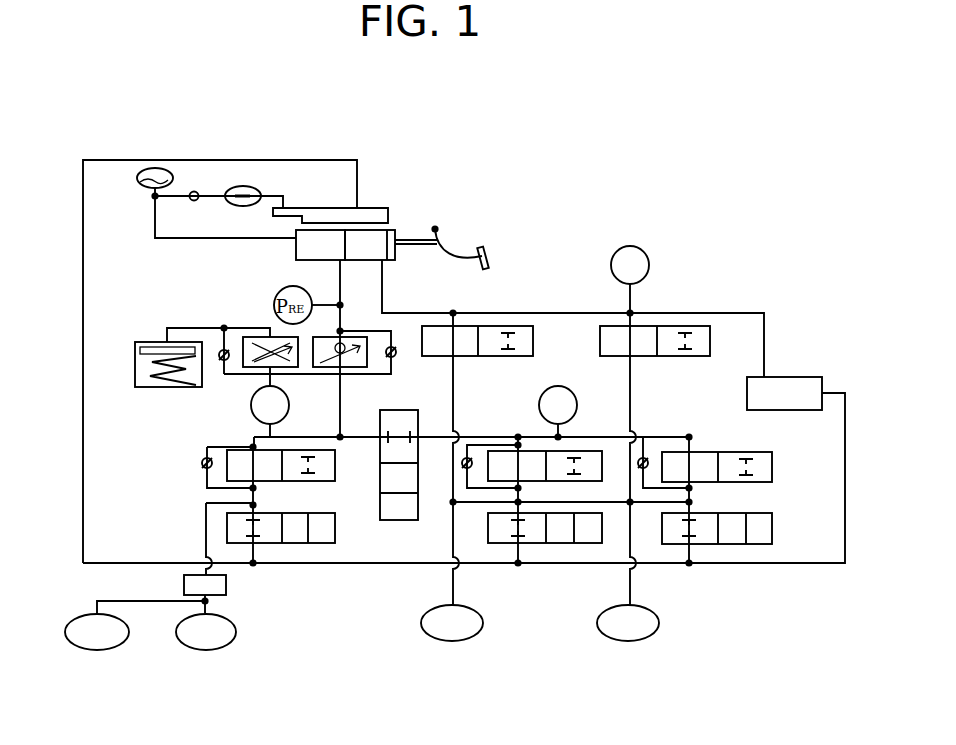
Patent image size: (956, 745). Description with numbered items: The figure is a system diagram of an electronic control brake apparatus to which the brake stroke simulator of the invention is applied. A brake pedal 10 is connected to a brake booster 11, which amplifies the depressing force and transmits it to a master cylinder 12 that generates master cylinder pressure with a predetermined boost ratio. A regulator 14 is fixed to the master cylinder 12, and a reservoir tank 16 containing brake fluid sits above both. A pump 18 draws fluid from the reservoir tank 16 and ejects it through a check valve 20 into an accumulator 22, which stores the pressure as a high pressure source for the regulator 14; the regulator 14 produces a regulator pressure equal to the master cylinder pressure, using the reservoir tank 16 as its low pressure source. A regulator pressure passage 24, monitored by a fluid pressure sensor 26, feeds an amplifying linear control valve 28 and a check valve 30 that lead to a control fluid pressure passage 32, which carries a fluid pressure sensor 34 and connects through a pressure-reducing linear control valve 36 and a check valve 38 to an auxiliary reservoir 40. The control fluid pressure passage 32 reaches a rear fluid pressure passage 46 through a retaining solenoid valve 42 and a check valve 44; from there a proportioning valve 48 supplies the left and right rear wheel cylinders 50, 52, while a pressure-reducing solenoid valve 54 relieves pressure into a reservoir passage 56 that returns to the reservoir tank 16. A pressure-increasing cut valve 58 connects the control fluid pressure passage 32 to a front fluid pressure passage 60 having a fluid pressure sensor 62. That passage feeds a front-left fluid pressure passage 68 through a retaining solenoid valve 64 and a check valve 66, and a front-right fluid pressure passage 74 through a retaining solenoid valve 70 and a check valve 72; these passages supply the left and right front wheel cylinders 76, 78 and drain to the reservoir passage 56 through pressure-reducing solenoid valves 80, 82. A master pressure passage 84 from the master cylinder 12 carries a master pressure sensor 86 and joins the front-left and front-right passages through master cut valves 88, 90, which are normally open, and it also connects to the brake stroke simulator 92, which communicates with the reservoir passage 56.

The brake pedal 10 is at (488, 258).
The brake booster 11 is at (400, 233).
The master cylinder 12 is at (362, 262).
The regulator 14 is at (296, 245).
The reservoir tank 16 is at (372, 212).
The pump 18 is at (262, 192).
The check valve 20 is at (198, 192).
The accumulator 22 is at (150, 190).
The regulator pressure passage 24 is at (338, 276).
The fluid pressure sensor 26 is at (258, 336).
The amplifying linear control valve 28 is at (368, 366).
The check valve 30 is at (395, 356).
The control fluid pressure passage 32 is at (338, 398).
The fluid pressure sensor 34 is at (254, 423).
The pressure-reducing linear control valve 36 is at (248, 332).
The check valve 38 is at (224, 362).
The auxiliary reservoir 40 is at (160, 388).
The retaining solenoid valve 42 is at (335, 462).
The check valve 44 is at (203, 465).
The rear fluid pressure passage 46 is at (222, 500).
The proportioning valve 48 is at (226, 583).
The left rear wheel cylinder 50 is at (108, 650).
The right rear wheel cylinder 52 is at (215, 650).
The pressure-reducing solenoid valve 54 is at (335, 520).
The reservoir passage 56 is at (355, 565).
The pressure-increasing cut valve 58 is at (395, 521).
The front fluid pressure passage 60 is at (592, 438).
The fluid pressure sensor 62 is at (560, 386).
The retaining solenoid valve 64 is at (582, 502).
The check valve 66 is at (467, 470).
The front-left fluid pressure passage 68 is at (522, 502).
The retaining solenoid valve 70 is at (765, 452).
The check valve 72 is at (646, 458).
The front-right fluid pressure passage 74 is at (692, 492).
The left front wheel cylinder 76 is at (483, 628).
The right front wheel cylinder 78 is at (658, 630).
The pressure-reducing solenoid valve 80 is at (558, 545).
The pressure-reducing solenoid valve 82 is at (772, 535).
The master pressure passage 84 is at (421, 312).
The master pressure sensor 86 is at (650, 263).
The master cut valve 88 is at (470, 358).
The master cut valve 90 is at (665, 358).
The brake stroke simulator 92 is at (780, 377).